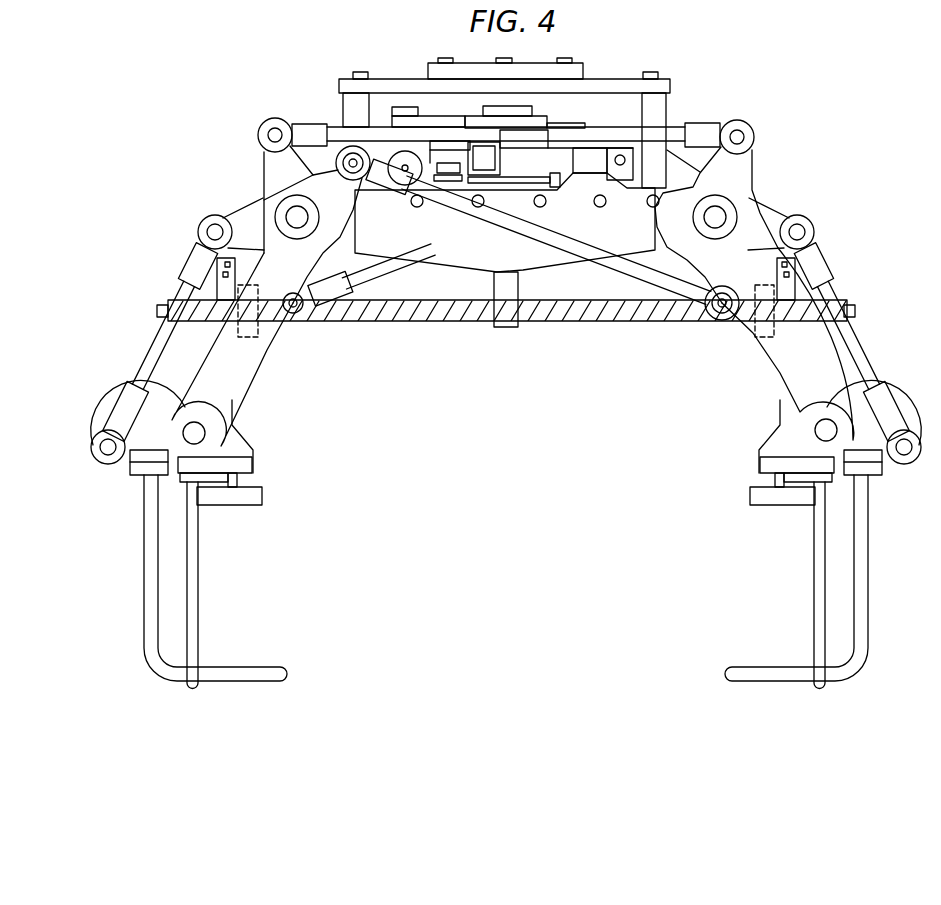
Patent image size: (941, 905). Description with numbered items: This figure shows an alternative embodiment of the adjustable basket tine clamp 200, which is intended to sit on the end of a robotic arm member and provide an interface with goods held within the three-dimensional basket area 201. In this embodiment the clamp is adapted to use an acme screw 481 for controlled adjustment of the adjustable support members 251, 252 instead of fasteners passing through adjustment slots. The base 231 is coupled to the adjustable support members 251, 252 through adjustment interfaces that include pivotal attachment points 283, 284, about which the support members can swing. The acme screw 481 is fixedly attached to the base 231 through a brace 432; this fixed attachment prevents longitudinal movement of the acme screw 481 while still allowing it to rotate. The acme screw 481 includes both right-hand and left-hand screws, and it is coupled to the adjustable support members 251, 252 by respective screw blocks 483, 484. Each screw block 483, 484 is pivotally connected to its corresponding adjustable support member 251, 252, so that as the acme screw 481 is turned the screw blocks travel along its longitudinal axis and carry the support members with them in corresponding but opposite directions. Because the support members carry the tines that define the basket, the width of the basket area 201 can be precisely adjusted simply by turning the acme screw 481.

The adjustable basket tine clamp 200 is at (226, 60).
The basket area 201 is at (568, 412).
The base 231 is at (460, 245).
The adjustable support member 251 is at (231, 391).
The adjustable support member 252 is at (819, 400).
The pivotal attachment point 283 is at (288, 216).
The pivotal attachment point 284 is at (723, 213).
The brace 432 is at (505, 327).
The acme screw 481 is at (856, 309).
The screw block 483 is at (252, 337).
The screw block 484 is at (763, 338).